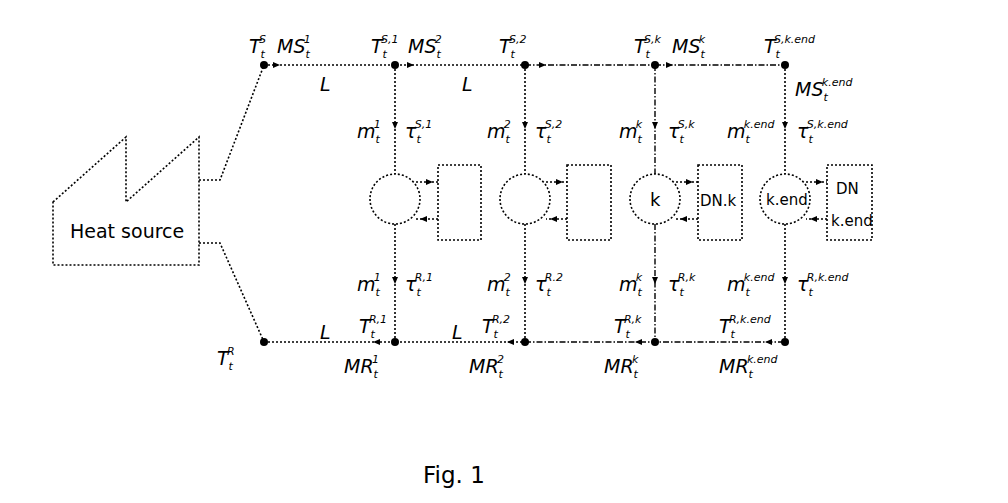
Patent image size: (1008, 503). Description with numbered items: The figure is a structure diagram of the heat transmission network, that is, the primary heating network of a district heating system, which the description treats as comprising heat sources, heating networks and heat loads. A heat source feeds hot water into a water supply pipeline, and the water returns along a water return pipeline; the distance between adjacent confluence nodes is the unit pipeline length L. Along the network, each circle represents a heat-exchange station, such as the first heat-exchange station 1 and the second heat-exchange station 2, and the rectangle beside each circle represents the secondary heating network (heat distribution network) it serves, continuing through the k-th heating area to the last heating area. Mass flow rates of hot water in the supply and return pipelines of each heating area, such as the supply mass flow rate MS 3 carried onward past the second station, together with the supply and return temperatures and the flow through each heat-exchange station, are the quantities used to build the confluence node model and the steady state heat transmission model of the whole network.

The first heating substation node 1 is at (425, 202).
The second heating substation node 2 is at (555, 202).
The supply pipe segment carrying mass flow MS3 3 is at (590, 50).